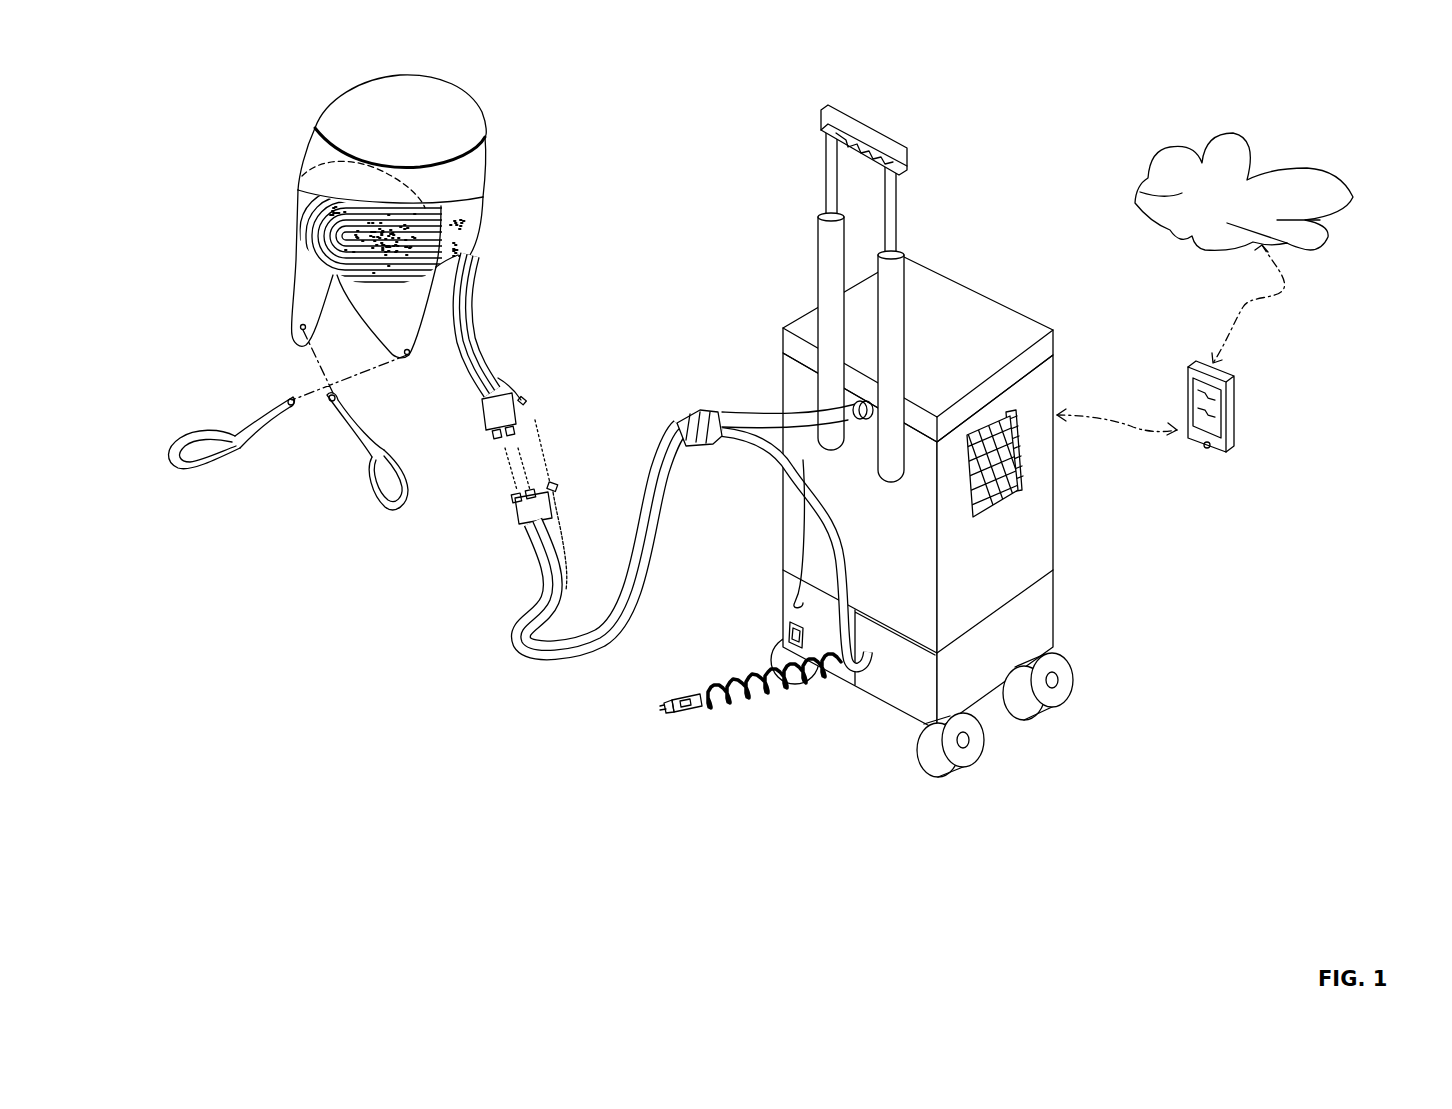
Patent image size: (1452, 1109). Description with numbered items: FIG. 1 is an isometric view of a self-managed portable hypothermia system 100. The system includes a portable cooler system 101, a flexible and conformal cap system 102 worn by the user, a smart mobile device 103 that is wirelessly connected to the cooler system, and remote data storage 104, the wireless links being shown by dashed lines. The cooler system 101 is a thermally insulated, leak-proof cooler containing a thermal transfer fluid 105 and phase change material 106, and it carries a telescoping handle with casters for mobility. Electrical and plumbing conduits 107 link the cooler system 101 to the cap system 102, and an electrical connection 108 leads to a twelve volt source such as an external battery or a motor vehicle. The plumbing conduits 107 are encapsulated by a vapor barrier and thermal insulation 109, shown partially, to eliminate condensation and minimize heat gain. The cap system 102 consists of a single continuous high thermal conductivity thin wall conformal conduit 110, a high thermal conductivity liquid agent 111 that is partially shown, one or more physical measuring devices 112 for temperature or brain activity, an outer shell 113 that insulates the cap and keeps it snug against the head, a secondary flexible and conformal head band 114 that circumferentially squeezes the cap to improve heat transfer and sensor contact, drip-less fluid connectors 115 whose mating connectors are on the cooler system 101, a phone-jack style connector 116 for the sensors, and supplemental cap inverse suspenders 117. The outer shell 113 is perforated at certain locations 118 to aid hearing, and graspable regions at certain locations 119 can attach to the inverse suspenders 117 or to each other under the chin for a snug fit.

The self-managed portable hypothermia system 100 is at (648, 910).
The portable cooler system 101 is at (991, 471).
The flexible and conformal cap system 102 is at (392, 295).
The smart mobile device 103 is at (1237, 433).
The remote data storage 104 is at (1214, 213).
The thermal transfer fluid 105 is at (1010, 458).
The phase change material 106 is at (1000, 503).
The electrical and plumbing conduits 107 is at (527, 657).
The electrical connection 108 is at (728, 725).
The vapor barrier and thermal insulation 109 is at (700, 415).
The thin wall conformal conduit 110 is at (468, 343).
The high thermal conductivity liquid agent 111 is at (360, 242).
The physical measuring devices 112 is at (337, 215).
The outer shell 113 is at (342, 110).
The head band 114 is at (312, 157).
The drip-less fluid connectors 115 is at (527, 418).
The connector for sensors 116 is at (530, 394).
The supplemental cap inverse suspenders 117 is at (244, 396).
The perforated locations 118 is at (466, 247).
The attachment locations 119 is at (297, 327).